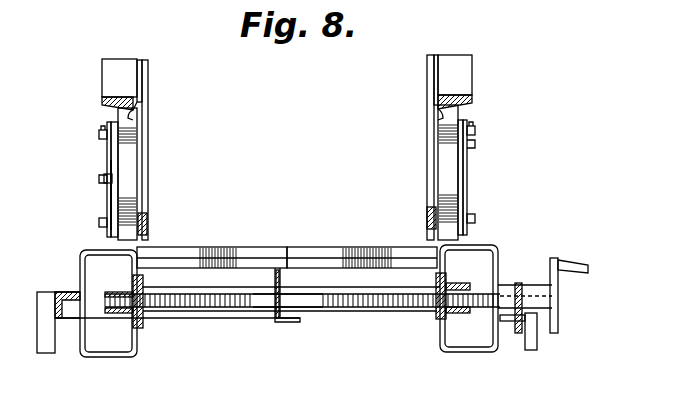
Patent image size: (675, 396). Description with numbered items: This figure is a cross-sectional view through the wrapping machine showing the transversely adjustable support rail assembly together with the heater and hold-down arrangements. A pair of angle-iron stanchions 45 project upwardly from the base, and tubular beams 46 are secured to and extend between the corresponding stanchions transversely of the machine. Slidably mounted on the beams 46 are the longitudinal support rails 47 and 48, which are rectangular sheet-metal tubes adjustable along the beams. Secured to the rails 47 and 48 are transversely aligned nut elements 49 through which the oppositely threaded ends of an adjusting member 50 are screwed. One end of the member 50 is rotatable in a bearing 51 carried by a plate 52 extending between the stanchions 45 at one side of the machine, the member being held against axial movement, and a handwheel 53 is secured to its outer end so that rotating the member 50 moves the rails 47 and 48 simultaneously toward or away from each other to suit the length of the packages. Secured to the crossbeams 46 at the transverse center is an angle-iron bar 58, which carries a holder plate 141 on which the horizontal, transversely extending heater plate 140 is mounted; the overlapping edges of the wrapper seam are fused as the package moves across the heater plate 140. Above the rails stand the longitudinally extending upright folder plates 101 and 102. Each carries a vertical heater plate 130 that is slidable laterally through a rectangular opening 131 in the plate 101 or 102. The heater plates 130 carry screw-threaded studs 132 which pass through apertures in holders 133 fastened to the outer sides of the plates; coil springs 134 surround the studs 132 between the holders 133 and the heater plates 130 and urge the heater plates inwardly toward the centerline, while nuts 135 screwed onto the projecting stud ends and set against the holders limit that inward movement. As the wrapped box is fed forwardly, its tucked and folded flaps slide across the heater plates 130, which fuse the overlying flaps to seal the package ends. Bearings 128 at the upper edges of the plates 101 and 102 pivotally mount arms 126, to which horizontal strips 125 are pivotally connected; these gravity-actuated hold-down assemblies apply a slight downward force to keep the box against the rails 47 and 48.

The angle-iron stanchion 45 is at (47, 352).
The tubular beam 46 is at (214, 318).
The longitudinal support rail 47 is at (110, 357).
The longitudinal support rail 48 is at (464, 352).
The nut element 49 is at (142, 326).
The adjusting member 50 is at (358, 310).
The bearing 51 is at (530, 285).
The plate 52 is at (522, 325).
The handwheel 53 is at (558, 318).
The angle-iron bar 58 is at (278, 322).
The upright plate 101 is at (136, 106).
The upright plate 102 is at (438, 108).
The horizontal strip 125 is at (146, 218).
The arm 126 is at (148, 178).
The bearing 128 is at (122, 66).
The vertical heater plate 130 is at (132, 152).
The rectangular opening 131 is at (134, 120).
The screw-threaded stud 132 is at (99, 134).
The holder 133 is at (107, 156).
The coil spring 134 is at (104, 178).
The nut 135 is at (108, 202).
The horizontal heater plate 140 is at (258, 230).
The holder plate 141 is at (337, 226).